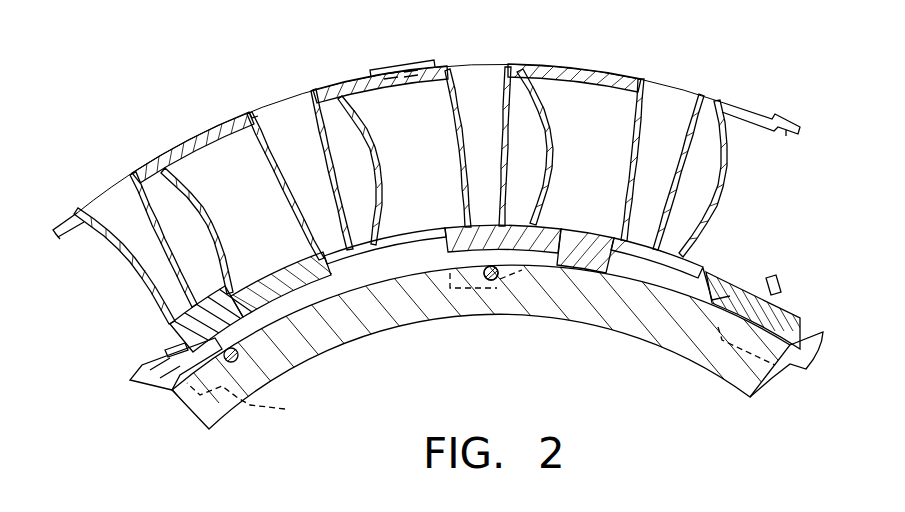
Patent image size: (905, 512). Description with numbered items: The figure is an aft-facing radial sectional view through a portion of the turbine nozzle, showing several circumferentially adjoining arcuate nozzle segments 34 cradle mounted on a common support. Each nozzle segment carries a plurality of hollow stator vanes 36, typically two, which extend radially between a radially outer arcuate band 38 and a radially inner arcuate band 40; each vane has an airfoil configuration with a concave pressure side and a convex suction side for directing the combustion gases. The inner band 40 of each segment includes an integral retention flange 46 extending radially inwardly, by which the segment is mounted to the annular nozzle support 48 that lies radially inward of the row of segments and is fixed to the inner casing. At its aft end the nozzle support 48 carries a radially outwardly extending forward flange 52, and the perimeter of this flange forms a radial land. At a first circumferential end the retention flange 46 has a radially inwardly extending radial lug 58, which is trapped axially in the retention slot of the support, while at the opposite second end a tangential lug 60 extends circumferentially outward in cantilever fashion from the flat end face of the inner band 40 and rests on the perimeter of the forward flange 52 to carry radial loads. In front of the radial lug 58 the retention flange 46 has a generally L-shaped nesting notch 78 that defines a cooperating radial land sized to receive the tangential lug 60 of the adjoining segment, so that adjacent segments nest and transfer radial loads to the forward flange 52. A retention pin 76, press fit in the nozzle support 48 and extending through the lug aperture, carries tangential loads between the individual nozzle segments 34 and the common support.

The nozzle segments 34 is at (489, 76).
The stator vanes 36 is at (212, 221).
The outer band 38 is at (217, 122).
The inner band 40 is at (263, 282).
The retention flange 46 is at (586, 267).
The nozzle support 48 is at (185, 403).
The forward flange 52 is at (407, 318).
The radial lug 58 is at (251, 385).
The tangential lug 60 is at (449, 272).
The retention pin 76 is at (500, 280).
The nesting notch 78 is at (511, 256).